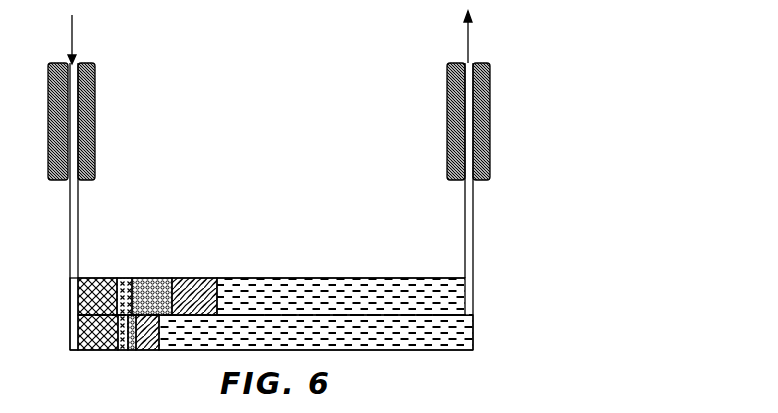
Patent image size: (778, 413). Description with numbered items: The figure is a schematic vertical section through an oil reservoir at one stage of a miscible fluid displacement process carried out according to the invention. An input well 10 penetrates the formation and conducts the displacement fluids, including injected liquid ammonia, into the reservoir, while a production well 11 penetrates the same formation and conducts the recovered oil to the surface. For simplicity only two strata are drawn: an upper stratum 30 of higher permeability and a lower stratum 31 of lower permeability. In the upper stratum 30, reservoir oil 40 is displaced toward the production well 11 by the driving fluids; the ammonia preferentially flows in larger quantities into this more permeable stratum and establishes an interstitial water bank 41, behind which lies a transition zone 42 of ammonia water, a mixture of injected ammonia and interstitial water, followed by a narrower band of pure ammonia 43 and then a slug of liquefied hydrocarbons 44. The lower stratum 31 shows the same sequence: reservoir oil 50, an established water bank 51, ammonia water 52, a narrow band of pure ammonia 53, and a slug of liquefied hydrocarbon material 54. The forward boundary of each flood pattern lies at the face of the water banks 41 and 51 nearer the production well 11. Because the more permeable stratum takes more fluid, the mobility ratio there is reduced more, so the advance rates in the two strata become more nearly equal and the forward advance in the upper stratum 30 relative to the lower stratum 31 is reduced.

The input well 10 is at (68, 201).
The production well 11 is at (474, 200).
The upper stratum 30 is at (327, 278).
The lower stratum 31 is at (363, 352).
The reservoir oil 40 is at (380, 297).
The water bank 41 is at (193, 278).
The transition zone 42 is at (156, 278).
The band of pure ammonia 43 is at (124, 278).
The slug of liquefied hydrocarbons 44 is at (105, 290).
The reservoir oil 50 is at (428, 323).
The water bank 51 is at (150, 346).
The ammonia water 52 is at (132, 345).
The band of pure ammonia 53 is at (120, 346).
The slug of liquefied hydrocarbon material 54 is at (77, 348).